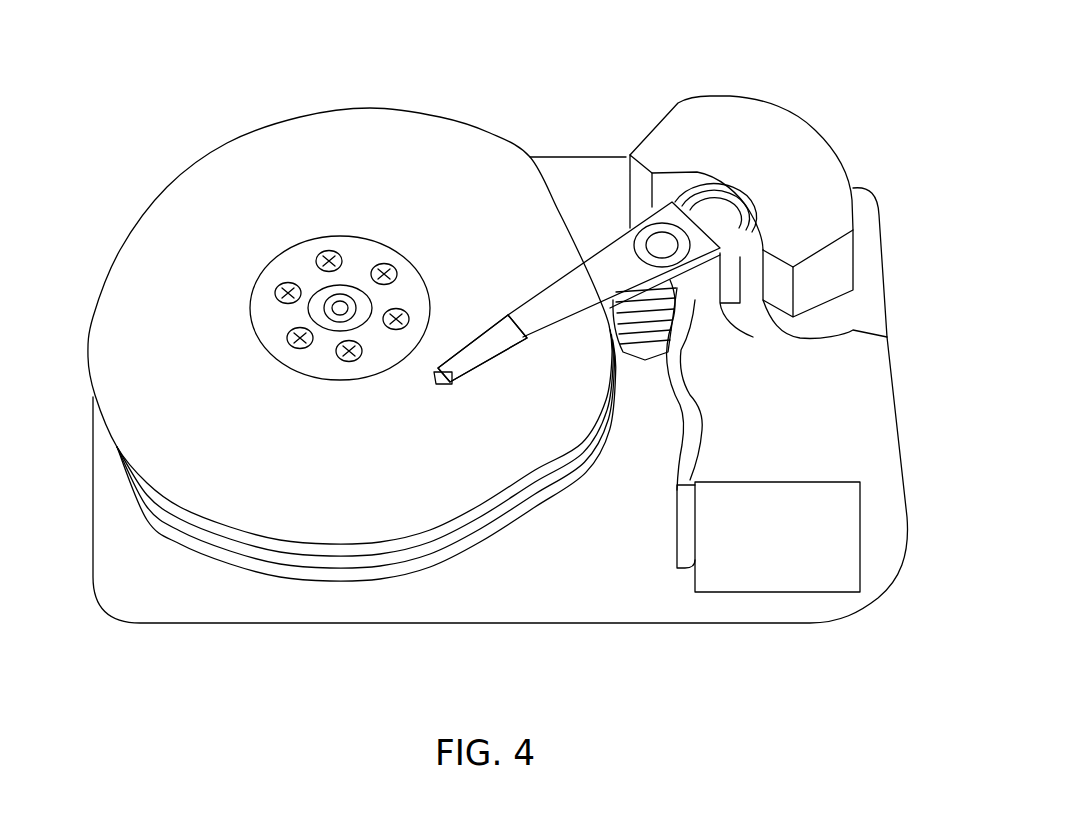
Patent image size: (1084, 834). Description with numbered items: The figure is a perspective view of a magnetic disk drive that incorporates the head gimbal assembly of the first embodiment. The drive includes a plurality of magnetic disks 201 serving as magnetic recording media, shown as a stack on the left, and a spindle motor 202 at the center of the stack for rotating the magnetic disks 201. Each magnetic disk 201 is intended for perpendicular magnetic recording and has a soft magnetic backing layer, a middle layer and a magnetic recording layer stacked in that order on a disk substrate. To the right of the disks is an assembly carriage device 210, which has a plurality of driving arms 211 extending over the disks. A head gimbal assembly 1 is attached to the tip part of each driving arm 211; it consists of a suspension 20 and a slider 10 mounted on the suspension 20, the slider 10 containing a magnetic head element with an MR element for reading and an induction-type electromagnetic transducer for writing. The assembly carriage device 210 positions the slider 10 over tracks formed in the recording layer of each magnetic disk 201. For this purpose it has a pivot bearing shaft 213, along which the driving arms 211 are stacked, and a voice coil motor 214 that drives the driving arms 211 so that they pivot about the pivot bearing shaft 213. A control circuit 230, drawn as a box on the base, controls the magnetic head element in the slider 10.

The head gimbal assembly 1 is at (457, 348).
The slider 10 is at (448, 384).
The suspension 20 is at (470, 368).
The magnetic disk 201 is at (229, 147).
The spindle motor 202 is at (341, 306).
The assembly carriage device 210 is at (766, 102).
The driving arm 211 is at (568, 287).
The pivot bearing shaft 213 is at (662, 246).
The voice coil motor 214 is at (887, 333).
The control circuit 230 is at (770, 592).